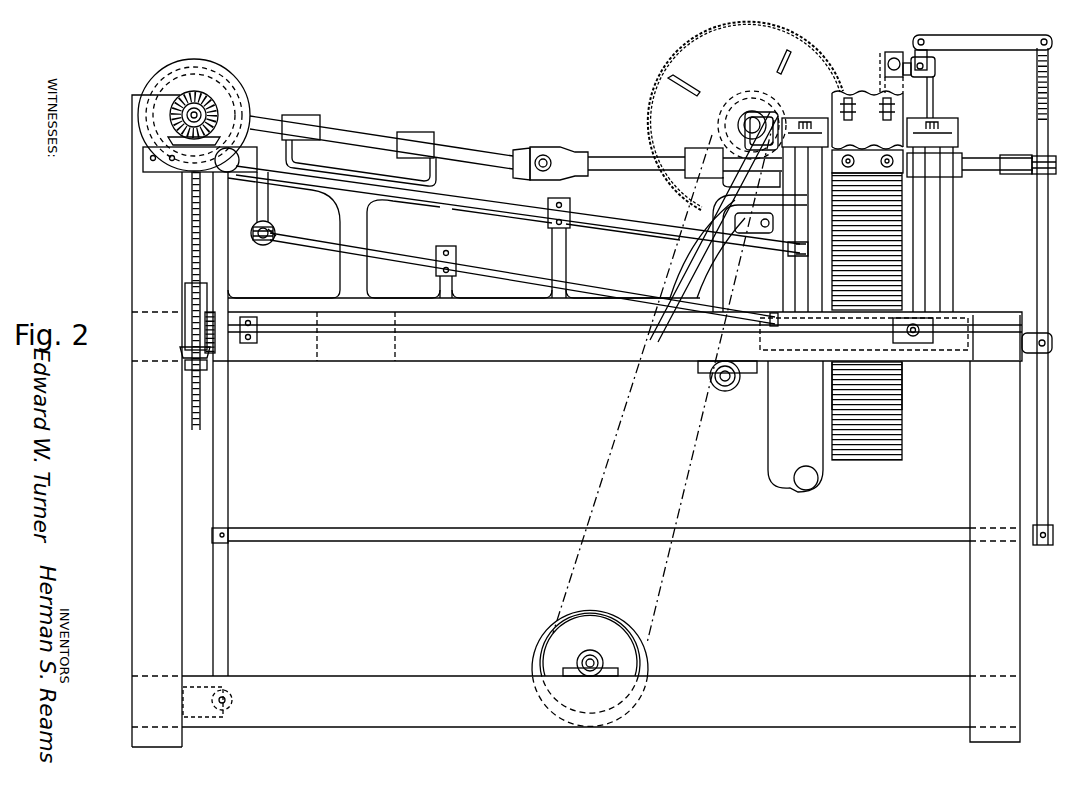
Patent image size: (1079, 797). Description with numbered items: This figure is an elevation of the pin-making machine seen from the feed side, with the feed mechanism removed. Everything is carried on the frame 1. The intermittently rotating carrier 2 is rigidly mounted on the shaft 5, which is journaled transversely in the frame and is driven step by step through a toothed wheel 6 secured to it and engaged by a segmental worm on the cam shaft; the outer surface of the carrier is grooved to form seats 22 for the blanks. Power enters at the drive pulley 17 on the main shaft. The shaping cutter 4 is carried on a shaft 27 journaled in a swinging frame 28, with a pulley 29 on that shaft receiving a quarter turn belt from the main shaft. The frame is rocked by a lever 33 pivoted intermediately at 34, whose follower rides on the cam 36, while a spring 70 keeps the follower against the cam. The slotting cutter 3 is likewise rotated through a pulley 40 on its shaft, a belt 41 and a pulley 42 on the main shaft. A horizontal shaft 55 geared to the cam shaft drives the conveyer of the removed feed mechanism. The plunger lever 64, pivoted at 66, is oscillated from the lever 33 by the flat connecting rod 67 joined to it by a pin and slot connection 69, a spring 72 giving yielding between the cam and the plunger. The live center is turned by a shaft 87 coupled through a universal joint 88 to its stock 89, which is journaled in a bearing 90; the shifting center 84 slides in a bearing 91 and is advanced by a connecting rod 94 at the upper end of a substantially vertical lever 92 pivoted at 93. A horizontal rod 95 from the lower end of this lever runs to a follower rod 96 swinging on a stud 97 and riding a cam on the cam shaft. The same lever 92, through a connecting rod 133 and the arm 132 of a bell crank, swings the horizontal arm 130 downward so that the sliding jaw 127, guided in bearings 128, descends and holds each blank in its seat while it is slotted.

The frame 1 is at (128, 453).
The carrier 2 is at (905, 430).
The slotting cutter 3 is at (652, 106).
The shaping cutter 4 is at (841, 92).
The shaft 5 is at (462, 345).
The toothed wheel 6 is at (198, 418).
The drive pulley 17 is at (541, 648).
The seats 22 is at (905, 375).
The shaft 27 is at (960, 131).
The swinging frame 28 is at (932, 242).
The pulley 29 is at (771, 112).
The lever 33 is at (447, 194).
The pivot 34 is at (568, 213).
The cam 36 is at (242, 87).
The pulley 40 is at (735, 108).
The belt 41 is at (650, 620).
The pulley 42 is at (628, 656).
The horizontal shaft 55 is at (534, 333).
The lever 64 is at (474, 267).
The pivot 66 is at (452, 250).
The connecting rod 67 is at (268, 211).
The pin and slot connection 69 is at (273, 240).
The spring 70 is at (240, 148).
The spring 72 is at (265, 246).
The shifting center 84 is at (977, 172).
The shaft 87 is at (350, 136).
The universal joint 88 is at (542, 150).
The stock 89 is at (681, 165).
The bearing 90 is at (693, 177).
The bearing 91 is at (963, 156).
The lever 92 is at (1042, 237).
The pivot 93 is at (1052, 343).
The connecting rod 94 is at (1027, 167).
The horizontal rod 95 is at (990, 532).
The follower rod 96 is at (226, 490).
The stud 97 is at (224, 710).
The sliding jaw 127 is at (893, 51).
The bearings 128 is at (880, 56).
The arm 130 is at (924, 72).
The arm 132 is at (928, 52).
The connecting rod 133 is at (951, 46).